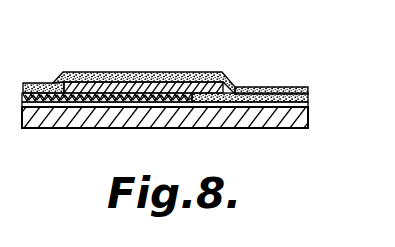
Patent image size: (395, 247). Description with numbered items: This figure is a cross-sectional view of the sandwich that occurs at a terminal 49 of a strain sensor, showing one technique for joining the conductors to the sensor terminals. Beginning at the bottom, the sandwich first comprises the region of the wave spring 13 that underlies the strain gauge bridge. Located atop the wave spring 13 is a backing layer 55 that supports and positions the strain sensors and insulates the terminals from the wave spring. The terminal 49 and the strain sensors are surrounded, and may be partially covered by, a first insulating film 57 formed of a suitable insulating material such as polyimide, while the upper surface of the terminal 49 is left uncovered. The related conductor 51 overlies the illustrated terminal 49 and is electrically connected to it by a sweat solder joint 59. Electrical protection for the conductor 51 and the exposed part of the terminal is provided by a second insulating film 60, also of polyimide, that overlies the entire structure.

The wave spring 13 is at (112, 119).
The terminal 49 is at (40, 83).
The conductor 51 is at (182, 73).
The backing layer 55 is at (316, 106).
The first insulating film 57 is at (313, 93).
The sweat solder joint 59 is at (97, 75).
The second insulating film 60 is at (233, 75).